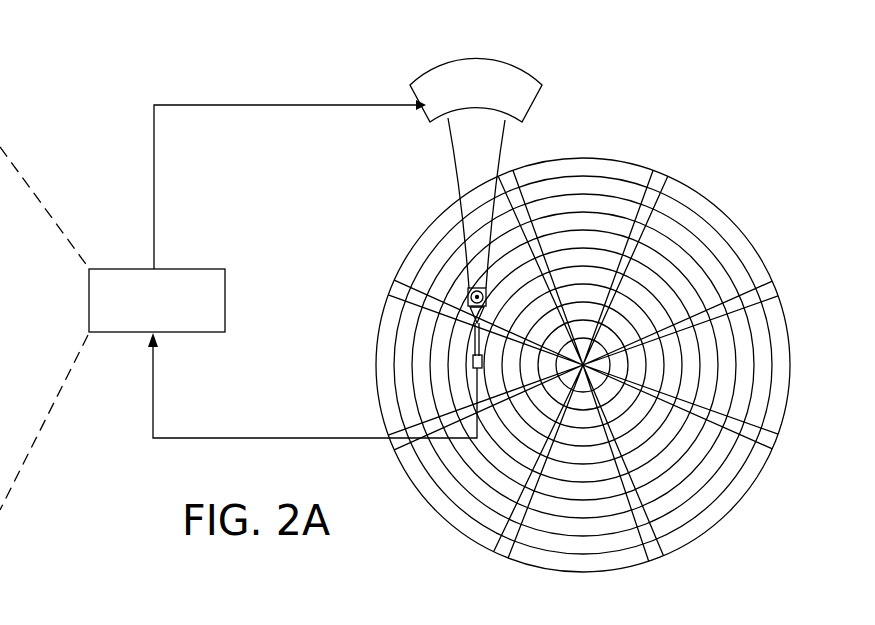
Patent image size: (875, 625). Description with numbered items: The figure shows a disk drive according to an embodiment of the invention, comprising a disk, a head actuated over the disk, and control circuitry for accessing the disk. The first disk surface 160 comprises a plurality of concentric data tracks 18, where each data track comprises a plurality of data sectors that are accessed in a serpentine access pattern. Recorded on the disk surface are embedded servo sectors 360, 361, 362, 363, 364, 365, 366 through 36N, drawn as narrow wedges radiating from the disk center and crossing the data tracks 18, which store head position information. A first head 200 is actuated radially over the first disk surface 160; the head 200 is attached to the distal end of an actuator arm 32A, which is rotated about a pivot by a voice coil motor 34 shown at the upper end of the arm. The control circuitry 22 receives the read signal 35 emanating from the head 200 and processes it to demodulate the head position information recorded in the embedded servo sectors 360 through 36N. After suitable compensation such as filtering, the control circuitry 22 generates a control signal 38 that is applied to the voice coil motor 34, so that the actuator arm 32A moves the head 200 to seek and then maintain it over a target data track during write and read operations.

The first disk surface 160 is at (723, 205).
The data tracks 18 is at (584, 174).
The first head 200 is at (468, 372).
The control circuitry 22 is at (192, 269).
The actuator arm 32A is at (460, 186).
The voice coil motor 34 is at (423, 118).
The read signal 35 is at (271, 437).
The embedded servo sector 360 is at (667, 176).
The embedded servo sector 361 is at (776, 290).
The embedded servo sector 362 is at (775, 450).
The embedded servo sector 363 is at (655, 558).
The embedded servo sector 364 is at (502, 555).
The embedded servo sector 365 is at (391, 448).
The embedded servo sector 366 is at (397, 276).
The embedded servo sector 36N is at (510, 178).
The control signal 38 is at (152, 173).